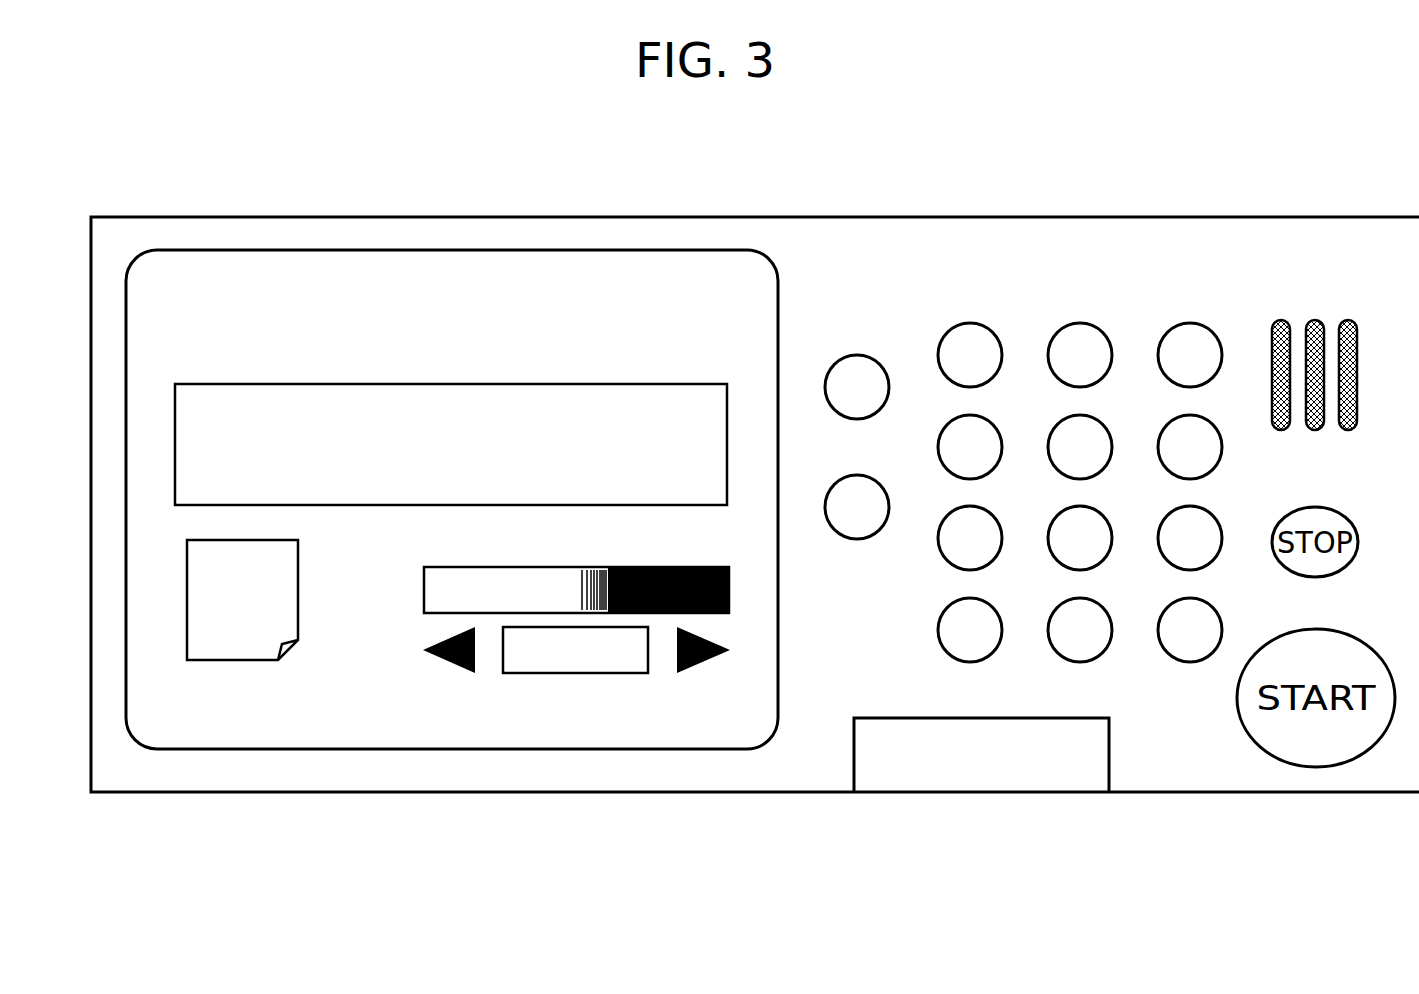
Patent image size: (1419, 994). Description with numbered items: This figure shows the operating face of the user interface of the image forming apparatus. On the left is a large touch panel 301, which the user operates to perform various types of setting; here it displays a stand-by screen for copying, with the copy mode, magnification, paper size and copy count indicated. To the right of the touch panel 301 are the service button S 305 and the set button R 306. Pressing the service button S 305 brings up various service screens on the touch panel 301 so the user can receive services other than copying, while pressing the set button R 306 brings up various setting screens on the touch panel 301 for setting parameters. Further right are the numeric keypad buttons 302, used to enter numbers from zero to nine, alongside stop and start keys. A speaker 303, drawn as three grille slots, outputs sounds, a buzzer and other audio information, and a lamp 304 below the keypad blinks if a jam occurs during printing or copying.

The touch panel 301 is at (326, 720).
The numeric keypad buttons 302 is at (974, 290).
The speaker 303 is at (1320, 298).
The lamp 304 is at (967, 762).
The service button S 305 is at (834, 484).
The set button R 306 is at (850, 356).